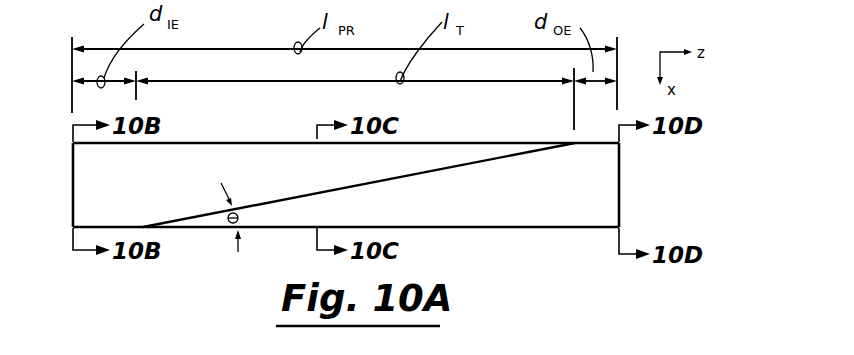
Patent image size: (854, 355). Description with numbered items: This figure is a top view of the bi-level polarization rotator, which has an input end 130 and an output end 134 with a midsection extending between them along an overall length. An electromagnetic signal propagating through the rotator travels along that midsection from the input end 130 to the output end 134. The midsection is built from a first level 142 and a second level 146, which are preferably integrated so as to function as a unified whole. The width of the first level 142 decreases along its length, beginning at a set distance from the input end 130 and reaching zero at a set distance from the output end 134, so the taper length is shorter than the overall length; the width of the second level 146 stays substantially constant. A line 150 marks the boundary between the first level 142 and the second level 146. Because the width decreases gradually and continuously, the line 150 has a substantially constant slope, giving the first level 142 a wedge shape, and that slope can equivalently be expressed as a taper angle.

The input end 130 is at (66, 185).
The output end 134 is at (628, 172).
The first level 142 is at (248, 154).
The second level 146 is at (470, 206).
The line 150 is at (485, 152).